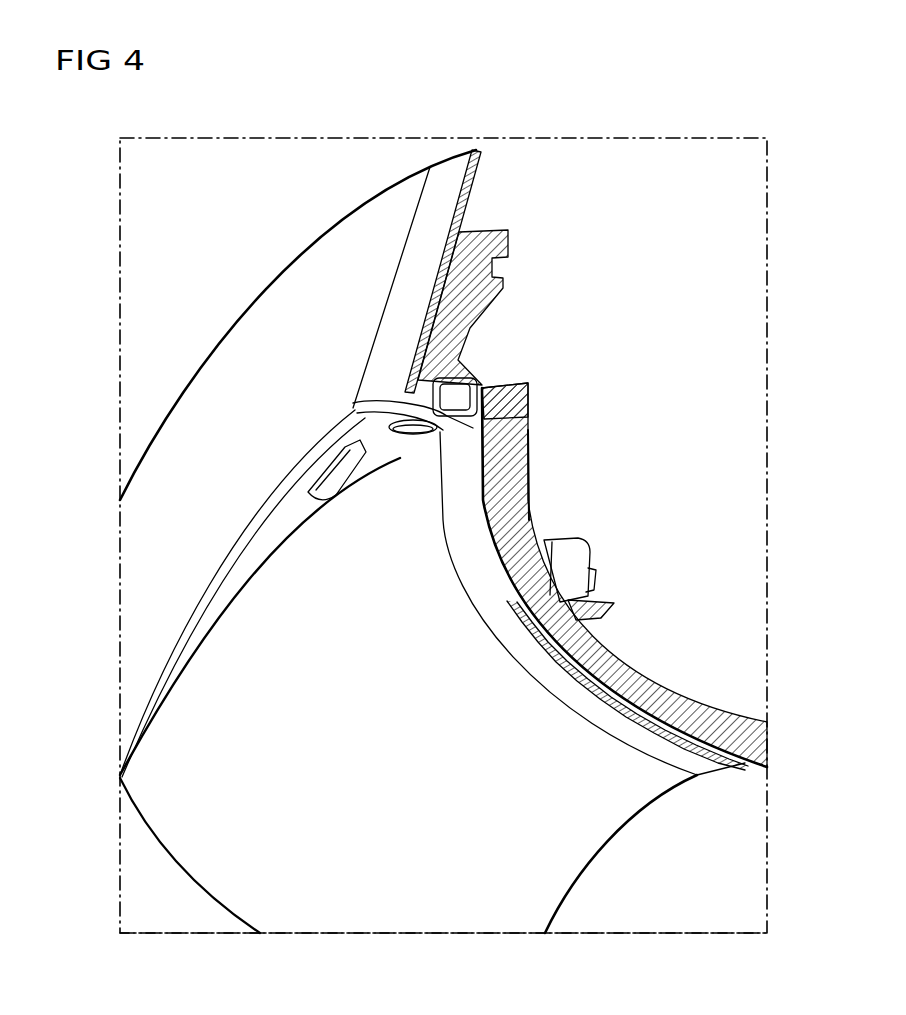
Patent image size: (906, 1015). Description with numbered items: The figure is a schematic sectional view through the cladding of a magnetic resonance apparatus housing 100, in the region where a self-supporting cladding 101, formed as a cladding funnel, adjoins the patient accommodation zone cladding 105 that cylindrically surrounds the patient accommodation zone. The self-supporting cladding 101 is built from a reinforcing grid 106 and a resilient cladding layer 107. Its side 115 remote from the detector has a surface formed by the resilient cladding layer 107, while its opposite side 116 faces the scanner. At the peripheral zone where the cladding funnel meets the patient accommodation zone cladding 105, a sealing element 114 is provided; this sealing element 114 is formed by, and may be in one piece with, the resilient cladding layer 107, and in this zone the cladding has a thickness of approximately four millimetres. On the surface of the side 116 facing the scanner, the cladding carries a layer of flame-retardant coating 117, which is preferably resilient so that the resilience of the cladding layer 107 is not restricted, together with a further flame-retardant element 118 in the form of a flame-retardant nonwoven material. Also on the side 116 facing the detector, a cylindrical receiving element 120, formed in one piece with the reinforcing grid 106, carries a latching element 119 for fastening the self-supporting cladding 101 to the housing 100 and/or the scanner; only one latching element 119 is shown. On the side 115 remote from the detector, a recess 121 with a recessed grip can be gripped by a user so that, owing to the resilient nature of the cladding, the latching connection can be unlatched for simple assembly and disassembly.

The housing 100 is at (410, 563).
The first self-supporting cladding 101 is at (398, 935).
The patient accommodation zone cladding 105 is at (704, 720).
The reinforcing grid 106 is at (468, 293).
The resilient cladding layer 107 is at (412, 326).
The sealing element 114 is at (452, 174).
The side remote from the detector 115 is at (326, 784).
The side which faces the detector 116 is at (528, 434).
The flame-retardant coating 117 is at (533, 500).
The further flame-retardant element 118 is at (643, 682).
The latching element 119 is at (574, 555).
The receiving element 120 is at (586, 580).
The recess 121 is at (348, 468).